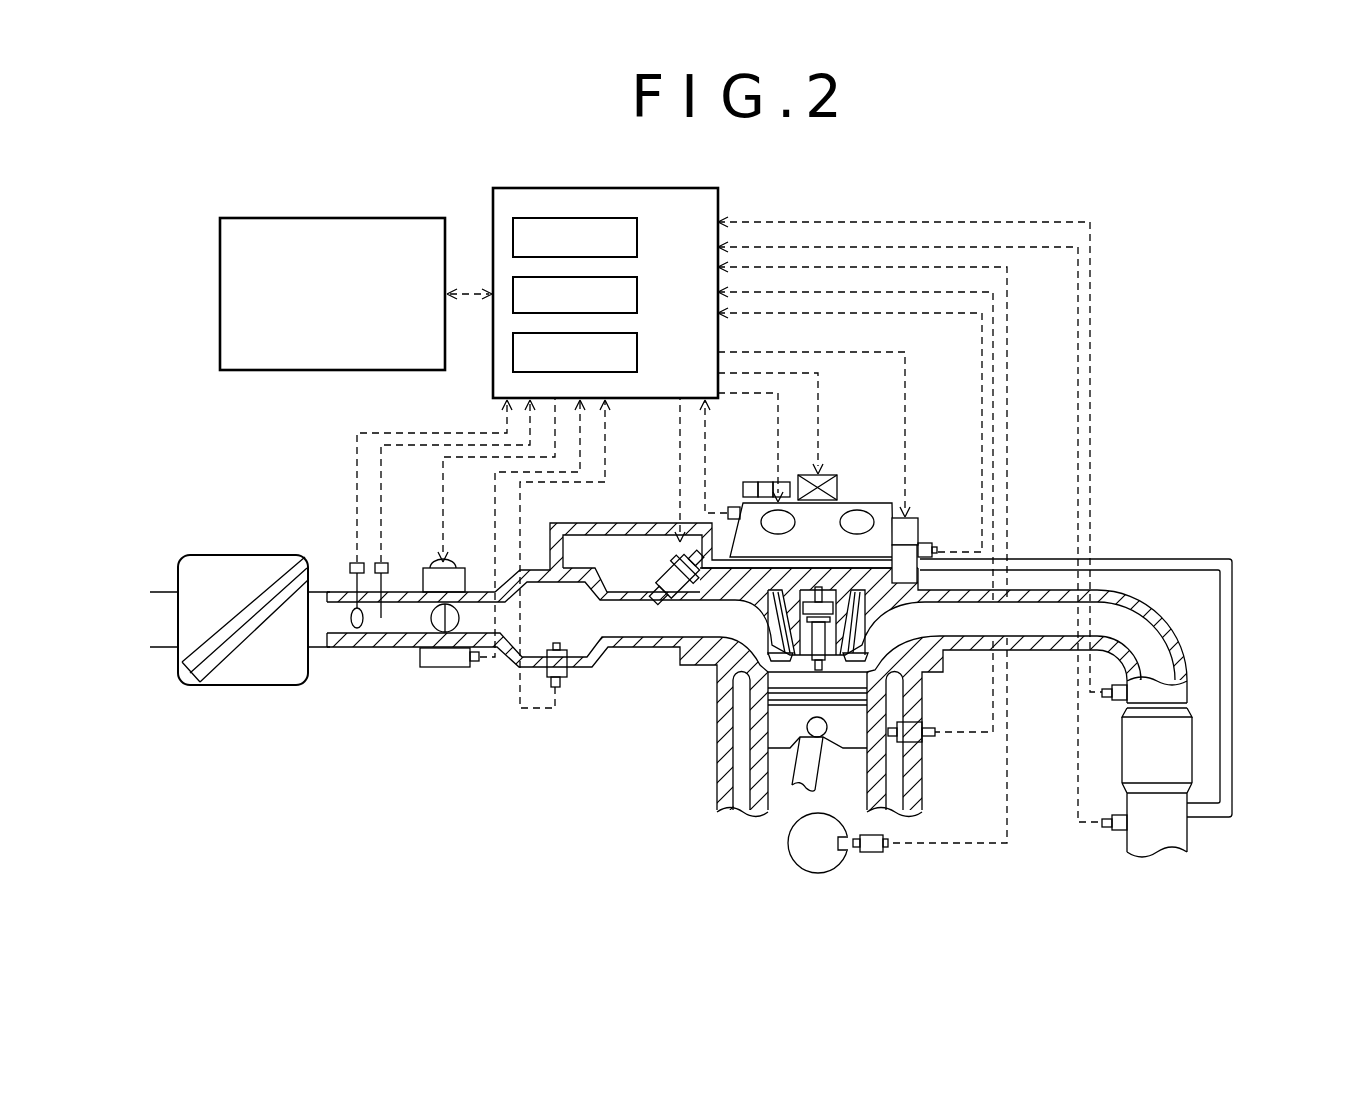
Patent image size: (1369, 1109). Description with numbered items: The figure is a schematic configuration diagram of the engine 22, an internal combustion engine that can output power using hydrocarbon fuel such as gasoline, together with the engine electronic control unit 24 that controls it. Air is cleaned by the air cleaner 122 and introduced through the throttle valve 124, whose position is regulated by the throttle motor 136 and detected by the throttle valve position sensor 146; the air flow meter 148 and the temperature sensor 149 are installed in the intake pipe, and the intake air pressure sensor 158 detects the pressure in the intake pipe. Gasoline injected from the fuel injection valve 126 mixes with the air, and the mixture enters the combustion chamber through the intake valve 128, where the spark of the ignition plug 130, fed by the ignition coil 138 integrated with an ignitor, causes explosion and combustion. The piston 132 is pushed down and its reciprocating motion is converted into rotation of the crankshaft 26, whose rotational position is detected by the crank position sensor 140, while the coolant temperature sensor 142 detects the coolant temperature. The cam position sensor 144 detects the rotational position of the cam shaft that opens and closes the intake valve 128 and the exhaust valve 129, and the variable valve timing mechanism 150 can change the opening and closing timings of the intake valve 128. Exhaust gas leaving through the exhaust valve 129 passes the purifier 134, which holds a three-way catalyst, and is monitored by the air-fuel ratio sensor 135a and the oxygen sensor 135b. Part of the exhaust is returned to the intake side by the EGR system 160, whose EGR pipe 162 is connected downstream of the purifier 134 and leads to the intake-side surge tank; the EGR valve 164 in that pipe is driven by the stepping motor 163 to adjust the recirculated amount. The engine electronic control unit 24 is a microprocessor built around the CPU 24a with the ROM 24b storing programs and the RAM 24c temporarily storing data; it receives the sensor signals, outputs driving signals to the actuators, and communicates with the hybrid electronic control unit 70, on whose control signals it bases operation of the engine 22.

The engine 22 is at (838, 393).
The engine electronic control unit 24 is at (605, 265).
The CPU 24a is at (639, 242).
The ROM 24b is at (639, 297).
The RAM 24c is at (639, 355).
The crankshaft 26 is at (788, 849).
The hybrid electronic control unit 70 is at (337, 218).
The air cleaner 122 is at (244, 553).
The throttle valve 124 is at (423, 623).
The fuel injection valve 126 is at (645, 556).
The intake valve 128 is at (782, 645).
The exhaust valve 129 is at (858, 645).
The ignition plug 130 is at (818, 585).
The piston 132 is at (783, 718).
The purifier 134 is at (1121, 743).
The air-fuel ratio sensor 135a is at (1110, 685).
The oxygen sensor 135b is at (1119, 830).
The throttle motor 136 is at (457, 567).
The ignition coil 138 is at (830, 472).
The crank position sensor 140 is at (868, 853).
The coolant temperature sensor 142 is at (915, 722).
The cam position sensor 144 is at (734, 506).
The throttle valve position sensor 146 is at (438, 670).
The air flow meter 148 is at (347, 563).
The temperature sensor 149 is at (392, 563).
The variable valve timing mechanism 150 is at (855, 500).
The intake air pressure sensor 158 is at (569, 677).
The exhaust gas recirculation (EGR) system 160 is at (1106, 641).
The EGR pipe 162 is at (1235, 675).
The stepping motor 163 is at (919, 517).
The EGR valve 164 is at (953, 526).